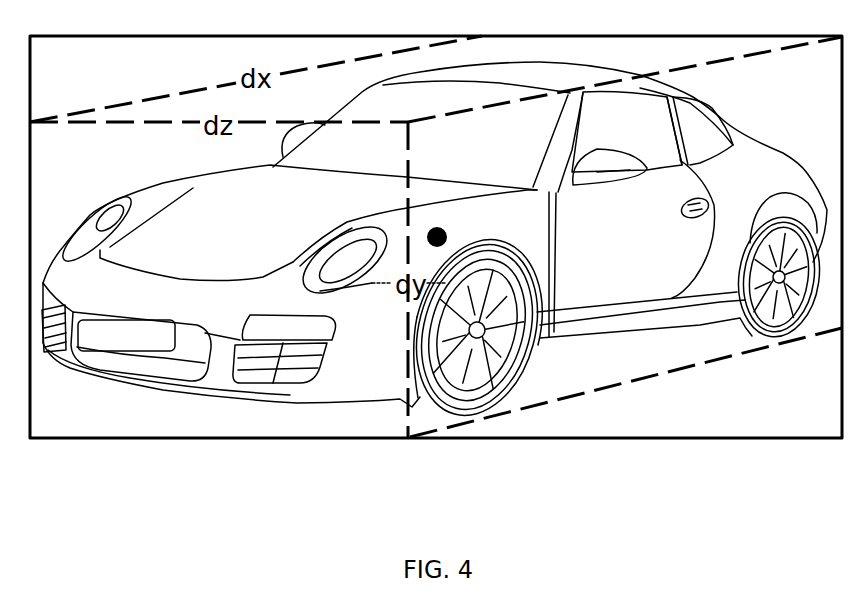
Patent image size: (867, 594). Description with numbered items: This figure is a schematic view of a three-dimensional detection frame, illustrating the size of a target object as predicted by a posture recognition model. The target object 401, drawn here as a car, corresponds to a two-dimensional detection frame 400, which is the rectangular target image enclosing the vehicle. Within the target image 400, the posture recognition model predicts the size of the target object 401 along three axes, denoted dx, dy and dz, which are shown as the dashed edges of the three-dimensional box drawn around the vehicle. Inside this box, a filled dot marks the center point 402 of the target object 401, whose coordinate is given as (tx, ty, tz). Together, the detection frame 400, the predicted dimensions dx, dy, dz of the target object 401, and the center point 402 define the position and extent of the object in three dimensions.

The two-dimensional detection frame 400 is at (319, 438).
The target object 401 is at (216, 236).
The center point 402 is at (441, 245).